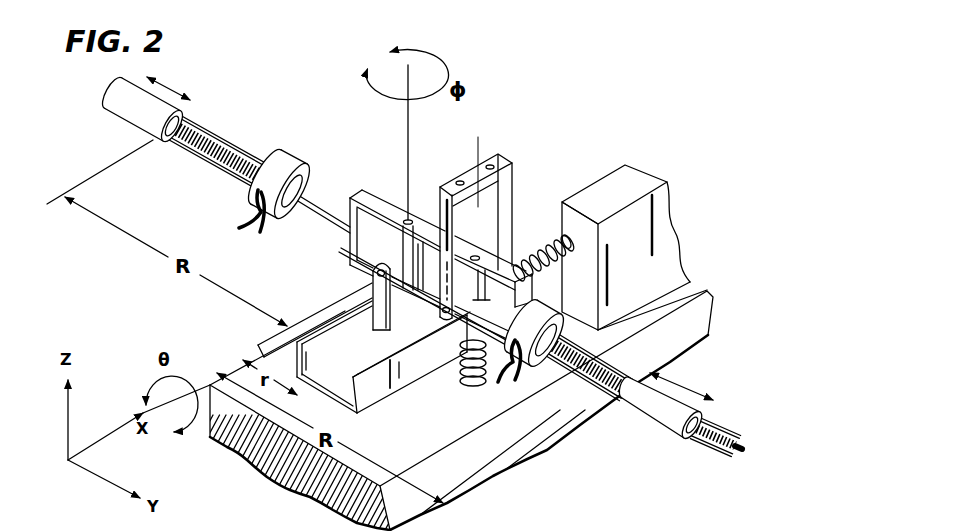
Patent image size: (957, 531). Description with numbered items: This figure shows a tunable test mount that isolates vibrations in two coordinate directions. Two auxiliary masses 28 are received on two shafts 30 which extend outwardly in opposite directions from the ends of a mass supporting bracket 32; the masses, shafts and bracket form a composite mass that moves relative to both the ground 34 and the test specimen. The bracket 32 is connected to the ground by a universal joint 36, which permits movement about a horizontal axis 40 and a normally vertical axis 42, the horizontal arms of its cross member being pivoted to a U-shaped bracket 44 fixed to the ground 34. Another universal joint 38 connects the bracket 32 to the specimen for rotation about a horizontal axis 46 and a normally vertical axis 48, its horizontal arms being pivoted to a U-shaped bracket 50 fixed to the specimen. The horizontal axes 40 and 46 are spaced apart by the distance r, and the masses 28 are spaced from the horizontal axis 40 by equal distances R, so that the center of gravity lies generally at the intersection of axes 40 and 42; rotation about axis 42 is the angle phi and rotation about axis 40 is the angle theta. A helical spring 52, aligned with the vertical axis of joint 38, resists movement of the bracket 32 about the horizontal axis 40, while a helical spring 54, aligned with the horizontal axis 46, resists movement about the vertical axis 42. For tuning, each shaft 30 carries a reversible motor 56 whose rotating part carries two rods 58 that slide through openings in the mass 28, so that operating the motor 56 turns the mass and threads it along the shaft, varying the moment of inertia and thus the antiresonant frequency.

The auxiliary mass 28 is at (108, 100).
The shaft 30 is at (320, 200).
The bracket 32 is at (367, 193).
The ground 34 is at (277, 357).
The universal joint 36 is at (405, 258).
The universal joint 38 is at (486, 282).
The horizontal axis 40 is at (322, 306).
The vertical axis 42 is at (410, 129).
The U-shaped bracket 44 is at (376, 312).
The horizontal axis 46 is at (370, 357).
The vertical axis 48 is at (480, 137).
The U-shaped bracket 50 is at (512, 166).
The helical spring 52 is at (461, 385).
The helical spring 54 is at (568, 247).
The reversible motor 56 is at (247, 197).
The rod 58 is at (200, 125).